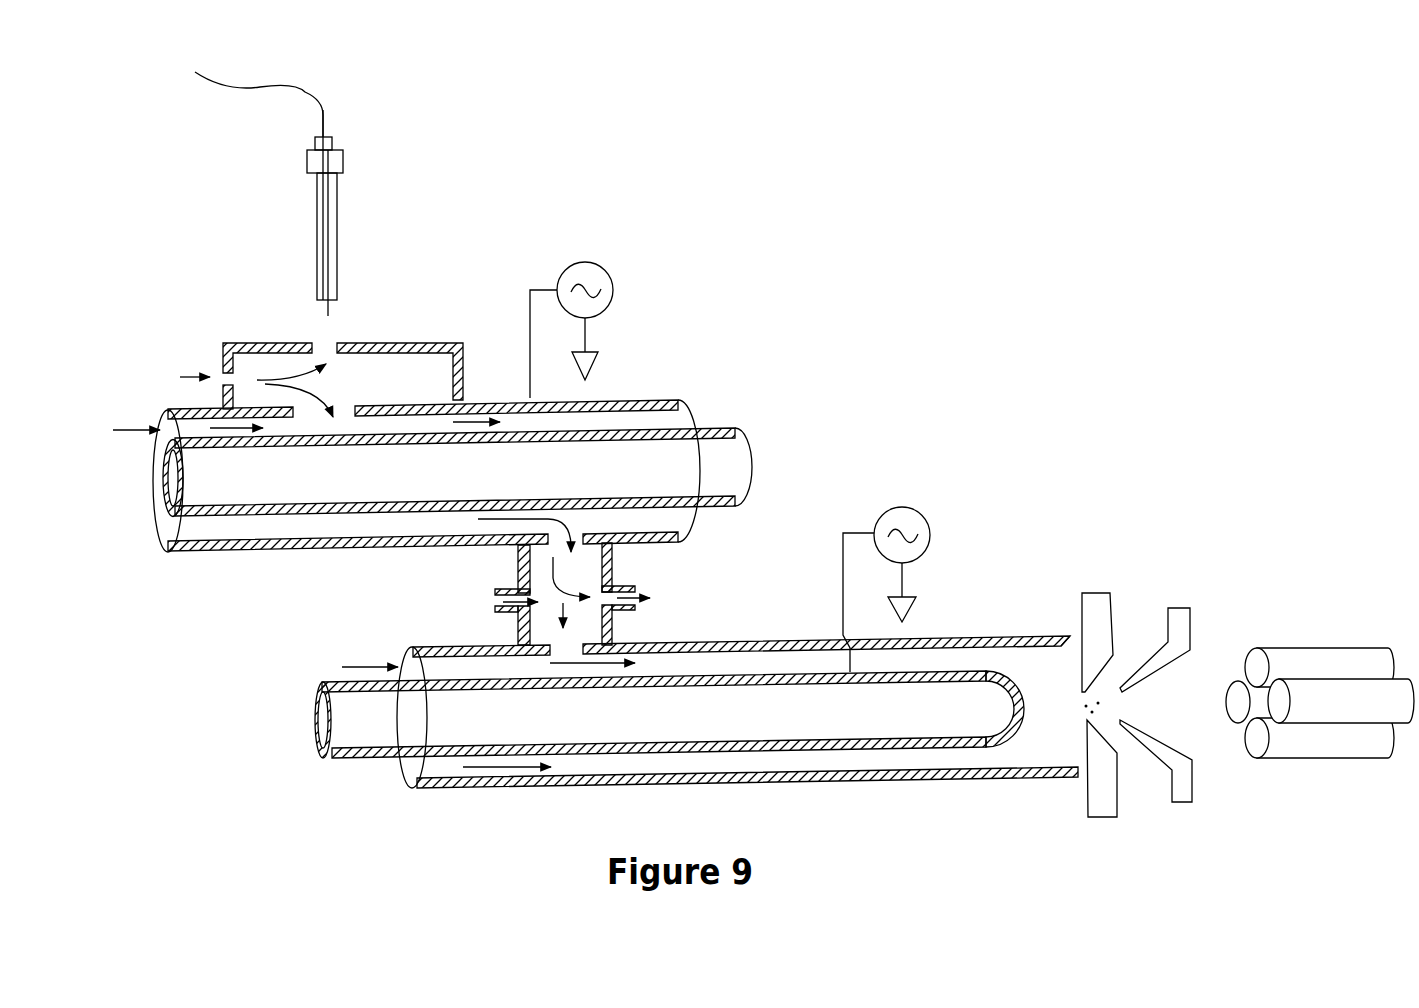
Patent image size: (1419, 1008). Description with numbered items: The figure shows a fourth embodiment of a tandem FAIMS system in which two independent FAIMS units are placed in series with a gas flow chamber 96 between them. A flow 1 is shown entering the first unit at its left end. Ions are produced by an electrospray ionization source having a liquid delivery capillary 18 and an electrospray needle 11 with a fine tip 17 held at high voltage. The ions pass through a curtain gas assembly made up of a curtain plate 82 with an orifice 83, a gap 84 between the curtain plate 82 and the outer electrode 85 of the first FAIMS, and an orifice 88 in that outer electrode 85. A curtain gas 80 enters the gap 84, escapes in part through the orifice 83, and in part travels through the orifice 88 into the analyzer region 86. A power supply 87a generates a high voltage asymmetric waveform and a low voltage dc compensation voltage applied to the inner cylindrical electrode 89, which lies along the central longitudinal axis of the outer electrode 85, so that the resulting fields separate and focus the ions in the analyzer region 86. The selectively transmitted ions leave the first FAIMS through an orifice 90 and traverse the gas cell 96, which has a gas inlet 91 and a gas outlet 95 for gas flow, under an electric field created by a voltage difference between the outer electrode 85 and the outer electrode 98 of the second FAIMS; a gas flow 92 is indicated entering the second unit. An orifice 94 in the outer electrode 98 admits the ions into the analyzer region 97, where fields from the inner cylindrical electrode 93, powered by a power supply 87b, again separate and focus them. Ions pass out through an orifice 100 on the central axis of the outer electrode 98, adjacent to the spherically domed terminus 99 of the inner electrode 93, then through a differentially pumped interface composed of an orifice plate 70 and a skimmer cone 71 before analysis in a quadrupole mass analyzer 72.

The sample gas inlet 1 is at (128, 496).
The electrospray needle 11 is at (399, 205).
The fine tip 17 is at (386, 270).
The liquid delivery capillary 18 is at (331, 94).
The orifice plate 70 is at (1131, 636).
The skimmer cone 71 is at (1186, 640).
The quadrupole mass analyzer 72 is at (1320, 639).
The curtain gas 80 is at (173, 316).
The curtain plate 82 is at (242, 303).
The orifice 83 is at (283, 296).
The gap 84 is at (417, 331).
The outer electrode 85 is at (426, 372).
The analyzer region 86 is at (488, 402).
The power supply 87a is at (644, 310).
The power supply 87b is at (926, 535).
The orifice 88 is at (363, 334).
The inner cylindrical electrode 89 is at (807, 410).
The orifice 90 is at (481, 558).
The gas inlet 91 is at (445, 623).
The second stage gas inlet 92 is at (314, 622).
The inner cylindrical electrode 93 is at (314, 774).
The orifice 94 is at (741, 632).
The gas outlet 95 is at (668, 607).
The gas flow chamber 96 is at (666, 567).
The analyzer region 97 is at (682, 624).
The outer electrode 98 is at (737, 776).
The spherically domed terminus 99 is at (1039, 779).
The orifice 100 is at (1099, 810).